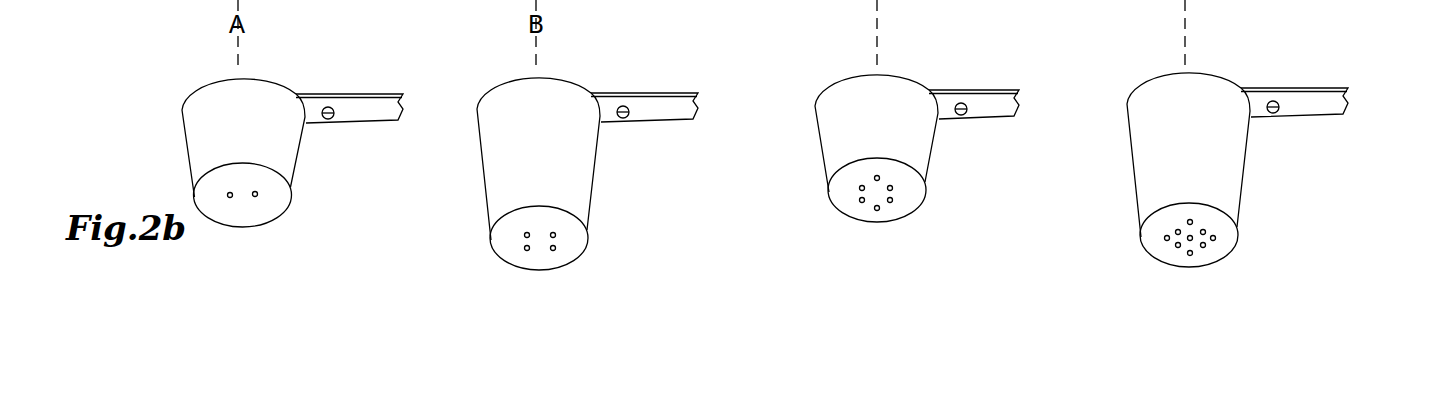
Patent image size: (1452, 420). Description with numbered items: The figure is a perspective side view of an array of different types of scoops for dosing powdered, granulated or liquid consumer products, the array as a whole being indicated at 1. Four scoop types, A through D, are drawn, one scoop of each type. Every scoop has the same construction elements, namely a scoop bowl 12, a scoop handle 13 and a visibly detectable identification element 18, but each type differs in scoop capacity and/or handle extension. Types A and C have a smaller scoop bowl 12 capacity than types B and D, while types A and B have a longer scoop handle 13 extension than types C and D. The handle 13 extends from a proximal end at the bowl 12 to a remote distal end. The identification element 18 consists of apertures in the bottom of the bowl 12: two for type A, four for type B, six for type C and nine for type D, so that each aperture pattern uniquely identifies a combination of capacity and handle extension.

The tubular member / arrow indicating assembly 1 is at (1372, 199).
The scoop bowl 12 is at (193, 125).
The scoop handle 13 is at (384, 51).
The visibly detectable identification element 18 is at (262, 187).